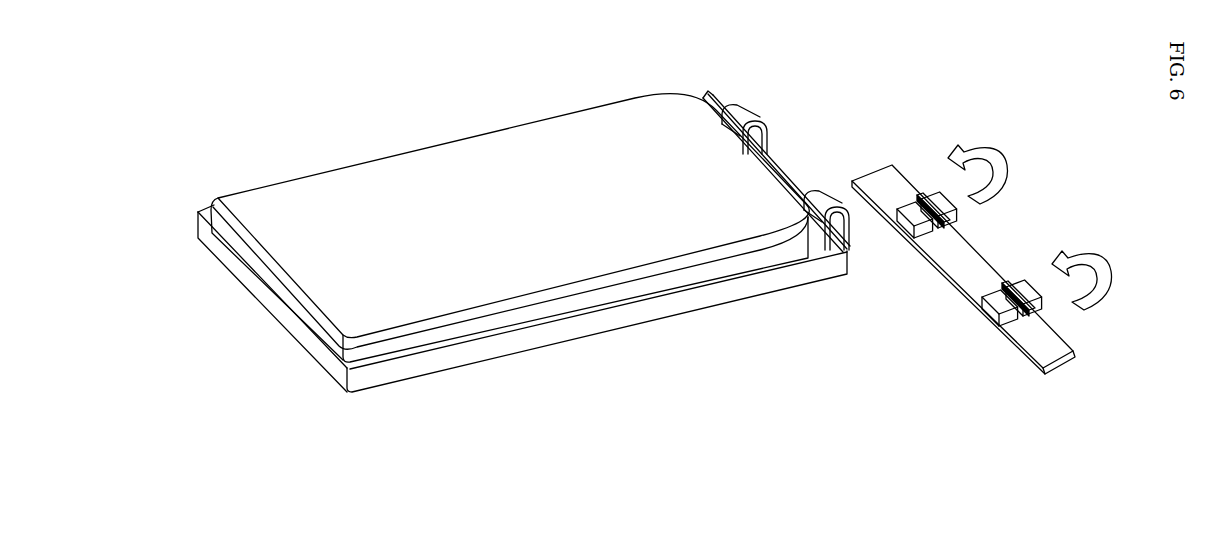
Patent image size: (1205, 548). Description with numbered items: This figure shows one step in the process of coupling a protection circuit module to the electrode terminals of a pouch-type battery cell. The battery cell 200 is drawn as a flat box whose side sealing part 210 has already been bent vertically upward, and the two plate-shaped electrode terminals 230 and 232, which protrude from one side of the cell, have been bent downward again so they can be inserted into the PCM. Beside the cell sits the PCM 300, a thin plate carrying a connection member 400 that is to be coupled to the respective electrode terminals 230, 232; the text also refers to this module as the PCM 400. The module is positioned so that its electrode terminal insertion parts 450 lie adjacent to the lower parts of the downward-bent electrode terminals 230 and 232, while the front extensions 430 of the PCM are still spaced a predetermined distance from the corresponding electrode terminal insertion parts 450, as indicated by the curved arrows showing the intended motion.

The battery cell 200 is at (521, 124).
The side sealing part 210 is at (620, 312).
The electrode terminal 230 is at (747, 108).
The electrode terminal 232 is at (810, 190).
The PCM 300 is at (900, 181).
The connection member 400 is at (989, 345).
The front extension 430 is at (1005, 281).
The electrode terminal insertion part 450 is at (1033, 290).